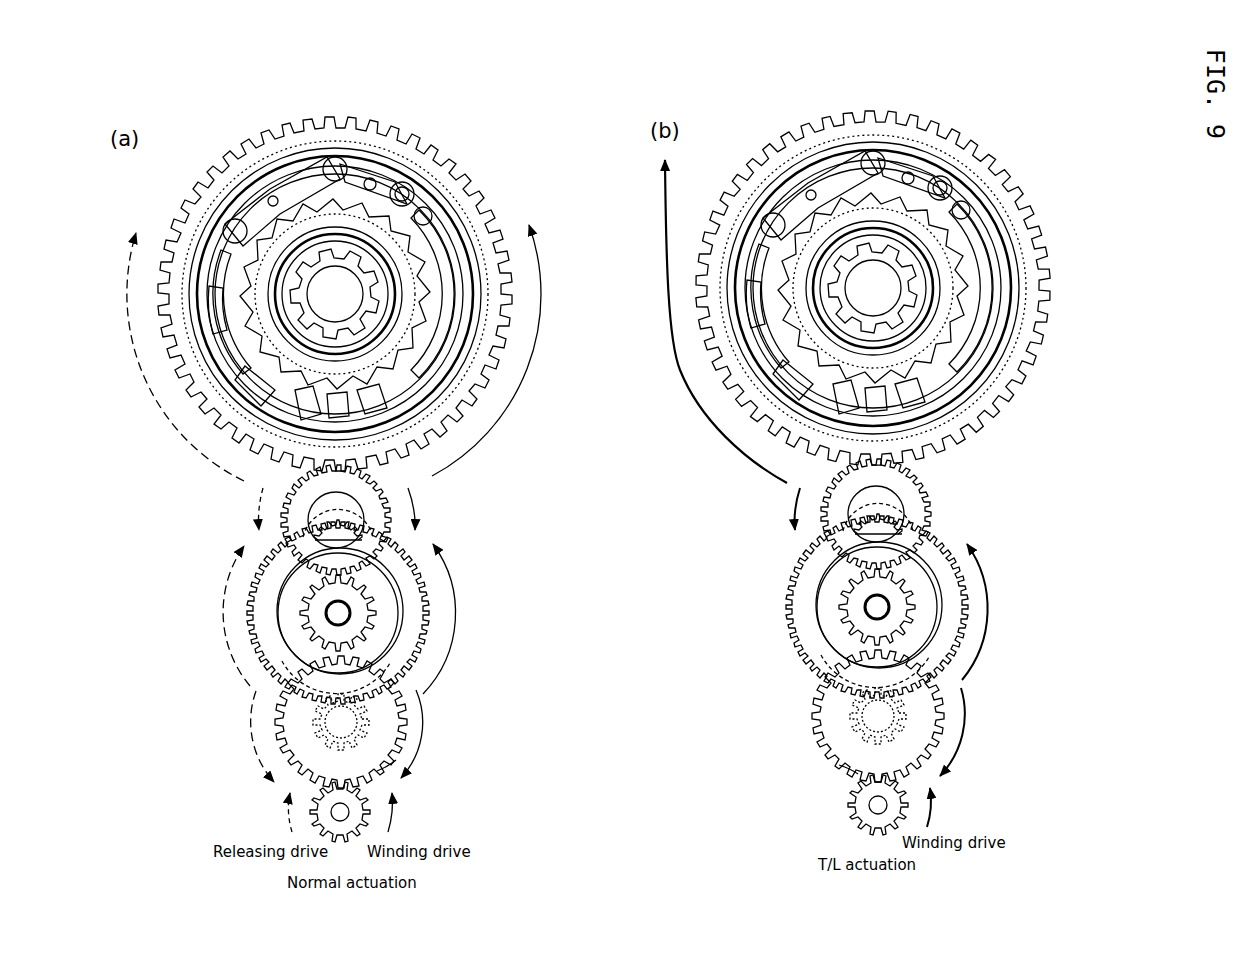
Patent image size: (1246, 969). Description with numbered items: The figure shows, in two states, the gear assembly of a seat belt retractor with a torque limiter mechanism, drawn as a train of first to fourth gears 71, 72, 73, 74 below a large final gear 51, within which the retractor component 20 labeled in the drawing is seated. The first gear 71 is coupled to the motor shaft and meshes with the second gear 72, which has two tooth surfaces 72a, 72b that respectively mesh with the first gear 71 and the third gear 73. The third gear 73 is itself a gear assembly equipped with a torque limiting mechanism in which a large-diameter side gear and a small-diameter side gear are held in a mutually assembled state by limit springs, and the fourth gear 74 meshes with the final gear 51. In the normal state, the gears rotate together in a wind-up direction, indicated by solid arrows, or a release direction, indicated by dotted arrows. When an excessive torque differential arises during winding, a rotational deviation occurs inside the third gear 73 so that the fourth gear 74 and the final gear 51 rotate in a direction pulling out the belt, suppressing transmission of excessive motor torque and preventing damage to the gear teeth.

The clutch mechanism 20 is at (465, 267).
The final gear 51 is at (273, 448).
The first gear 71 is at (311, 813).
The second gear 72 is at (280, 714).
The tooth surface 72a is at (379, 770).
The tooth surface 72b is at (366, 718).
The third gear 73 is at (431, 592).
The fourth gear 74 is at (290, 510).